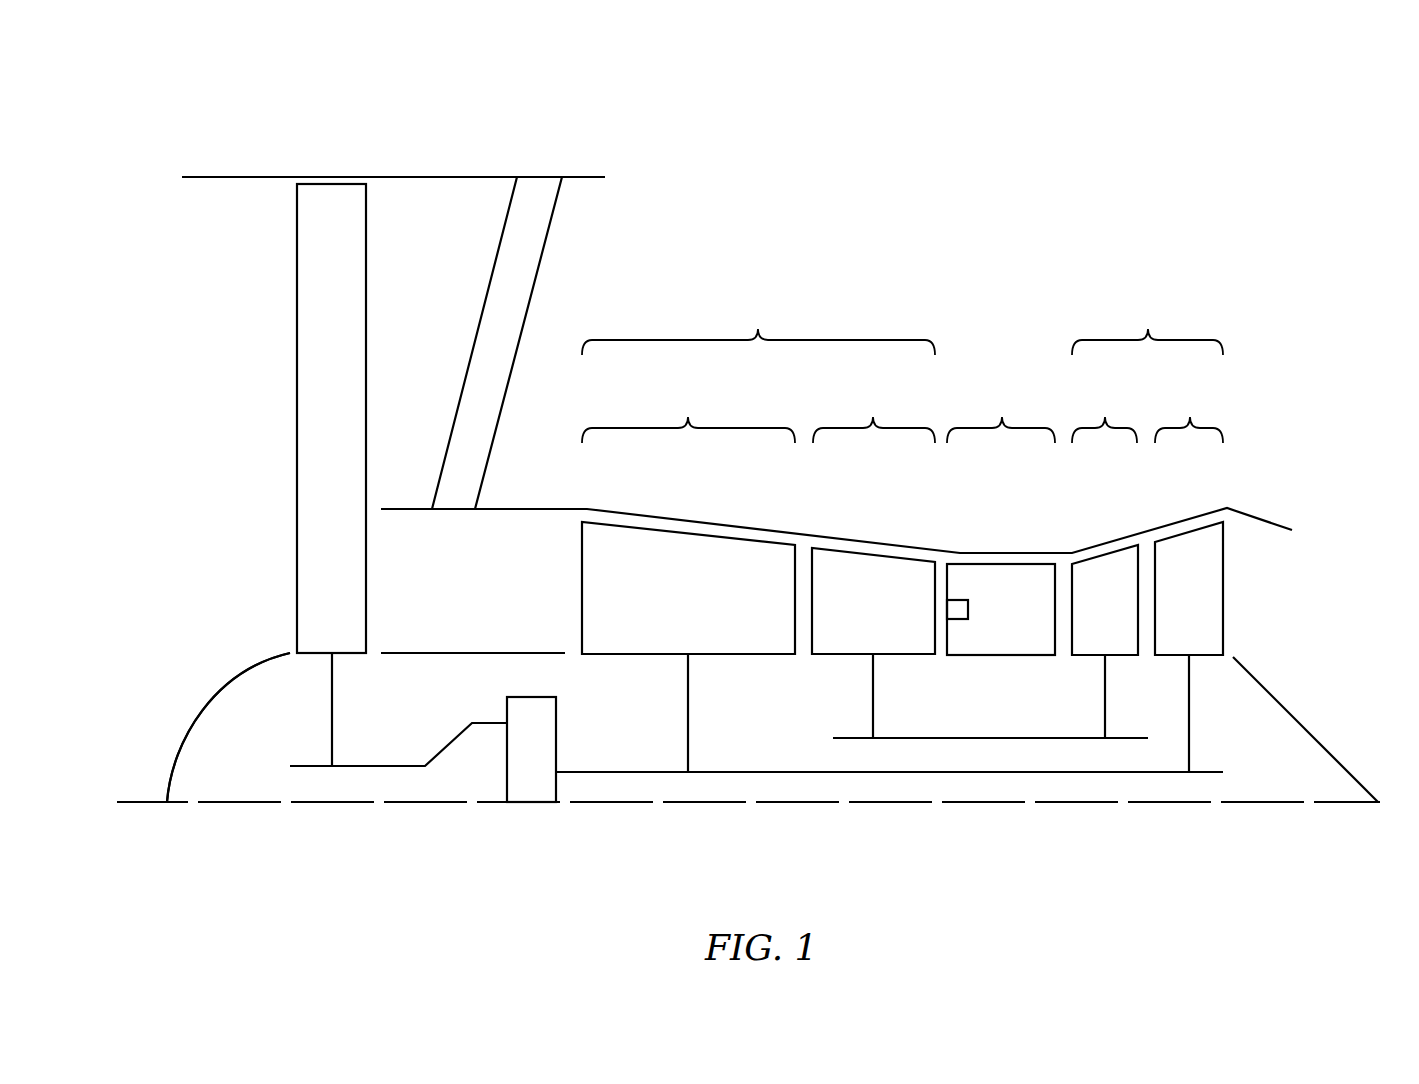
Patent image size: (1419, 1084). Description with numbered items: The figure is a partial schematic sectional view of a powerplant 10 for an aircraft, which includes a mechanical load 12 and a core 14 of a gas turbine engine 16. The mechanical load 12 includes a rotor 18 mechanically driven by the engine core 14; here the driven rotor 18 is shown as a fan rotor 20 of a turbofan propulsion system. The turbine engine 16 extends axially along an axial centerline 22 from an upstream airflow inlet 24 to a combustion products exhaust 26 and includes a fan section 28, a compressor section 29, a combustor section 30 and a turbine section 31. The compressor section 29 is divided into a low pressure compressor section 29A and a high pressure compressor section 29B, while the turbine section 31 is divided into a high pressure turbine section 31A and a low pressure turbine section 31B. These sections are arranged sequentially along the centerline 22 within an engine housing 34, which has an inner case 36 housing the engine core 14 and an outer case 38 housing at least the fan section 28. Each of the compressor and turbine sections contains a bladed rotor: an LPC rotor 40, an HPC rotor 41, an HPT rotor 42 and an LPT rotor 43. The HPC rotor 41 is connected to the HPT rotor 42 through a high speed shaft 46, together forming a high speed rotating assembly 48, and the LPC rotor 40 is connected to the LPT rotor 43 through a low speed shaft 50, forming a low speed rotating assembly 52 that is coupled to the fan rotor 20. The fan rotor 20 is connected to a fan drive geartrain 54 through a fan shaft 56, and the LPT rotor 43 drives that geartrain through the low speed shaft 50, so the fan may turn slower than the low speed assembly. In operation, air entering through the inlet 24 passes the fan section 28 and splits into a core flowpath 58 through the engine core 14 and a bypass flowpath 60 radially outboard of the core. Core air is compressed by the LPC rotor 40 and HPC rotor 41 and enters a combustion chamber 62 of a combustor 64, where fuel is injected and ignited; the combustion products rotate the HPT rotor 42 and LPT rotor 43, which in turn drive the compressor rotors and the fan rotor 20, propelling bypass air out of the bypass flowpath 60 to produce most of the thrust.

The powerplant 10 is at (176, 104).
The mechanical load 12 is at (272, 359).
The engine core 14 is at (972, 850).
The gas turbine engine 16 is at (1054, 195).
The rotor 18 is at (332, 712).
The fan rotor 20 is at (228, 727).
The axial centerline 22 is at (125, 802).
The airflow inlet 24 is at (183, 233).
The combustion products exhaust 26 is at (1292, 607).
The fan section 28 is at (334, 152).
The compressor section 29 is at (758, 326).
The low pressure compressor section 29A is at (688, 519).
The high pressure compressor section 29B is at (873, 519).
The combustor section 30 is at (1001, 520).
The turbine section 31 is at (1147, 326).
The high pressure turbine section 31A is at (1105, 520).
The low pressure turbine section 31B is at (1189, 520).
The engine housing 34 is at (666, 188).
The inner case 36 is at (518, 509).
The outer case 38 is at (548, 177).
The LPC rotor 40 is at (688, 682).
The HPC rotor 41 is at (873, 692).
The HPT rotor 42 is at (1105, 692).
The LPT rotor 43 is at (1189, 715).
The high speed shaft 46 is at (980, 738).
The high speed rotating assembly 48 is at (826, 724).
The low speed shaft 50 is at (882, 772).
The low speed rotating assembly 52 is at (1225, 757).
The fan drive geartrain 54 is at (516, 760).
The fan shaft 56 is at (373, 766).
The core flowpath 58 is at (518, 597).
The bypass flowpath 60 is at (408, 347).
The combustion chamber 62 is at (998, 622).
The combustor 64 is at (1000, 564).